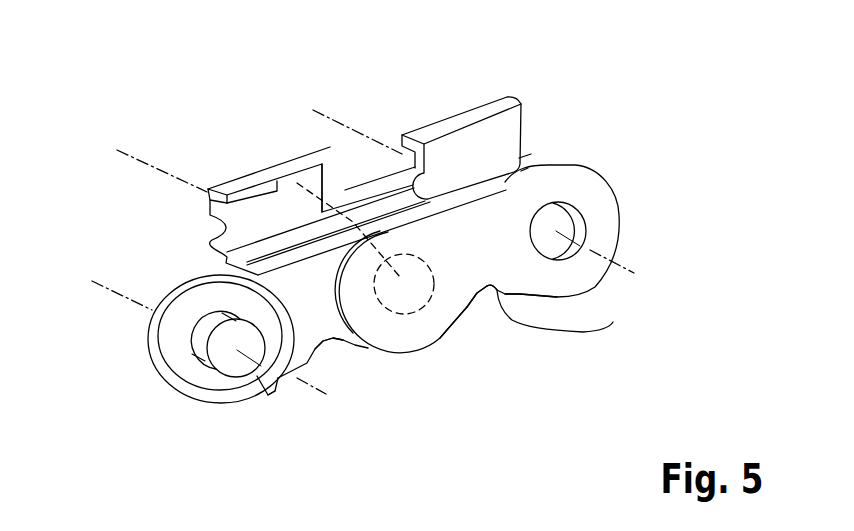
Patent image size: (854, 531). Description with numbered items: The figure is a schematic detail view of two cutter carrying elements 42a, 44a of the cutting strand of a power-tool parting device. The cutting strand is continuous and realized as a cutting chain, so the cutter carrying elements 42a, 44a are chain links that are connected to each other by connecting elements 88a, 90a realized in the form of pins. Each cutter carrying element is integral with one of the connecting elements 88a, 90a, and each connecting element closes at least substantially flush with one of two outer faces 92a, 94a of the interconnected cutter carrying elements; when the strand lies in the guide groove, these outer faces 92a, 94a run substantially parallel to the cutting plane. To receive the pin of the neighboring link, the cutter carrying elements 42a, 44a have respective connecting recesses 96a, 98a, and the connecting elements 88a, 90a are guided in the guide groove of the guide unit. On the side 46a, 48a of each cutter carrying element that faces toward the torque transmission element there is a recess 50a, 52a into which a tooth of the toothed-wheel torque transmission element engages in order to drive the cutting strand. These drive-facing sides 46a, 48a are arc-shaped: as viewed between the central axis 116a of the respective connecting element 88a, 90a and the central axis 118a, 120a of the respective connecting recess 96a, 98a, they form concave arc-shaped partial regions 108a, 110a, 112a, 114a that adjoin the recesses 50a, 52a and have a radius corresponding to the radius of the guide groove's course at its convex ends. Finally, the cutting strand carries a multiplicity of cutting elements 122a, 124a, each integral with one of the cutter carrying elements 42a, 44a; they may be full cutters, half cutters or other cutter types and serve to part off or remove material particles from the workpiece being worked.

The cutter carrying element 42a is at (177, 322).
The cutter carrying element 44a is at (568, 178).
The side of the cutter carrying element 46a is at (267, 404).
The side of the cutter carrying element 48a is at (554, 307).
The recess 50a is at (344, 343).
The recess 52a is at (532, 310).
The connecting element 88a is at (172, 382).
The connecting element 90a is at (290, 182).
The outer face 92a is at (497, 224).
The outer face 94a is at (146, 355).
The connecting recess 96a is at (417, 297).
The connecting recess 98a is at (595, 228).
The arc-shaped partial region 108a is at (286, 404).
The arc-shaped partial region 110a is at (382, 361).
The arc-shaped partial region 112a is at (469, 332).
The arc-shaped partial region 114a is at (541, 323).
The central axis of the connecting element 116a is at (104, 270).
The central axis of the connecting recess 118a is at (132, 137).
The central axis of the connecting recess 120a is at (325, 112).
The cutting element 122a is at (237, 188).
The cutting element 124a is at (425, 117).